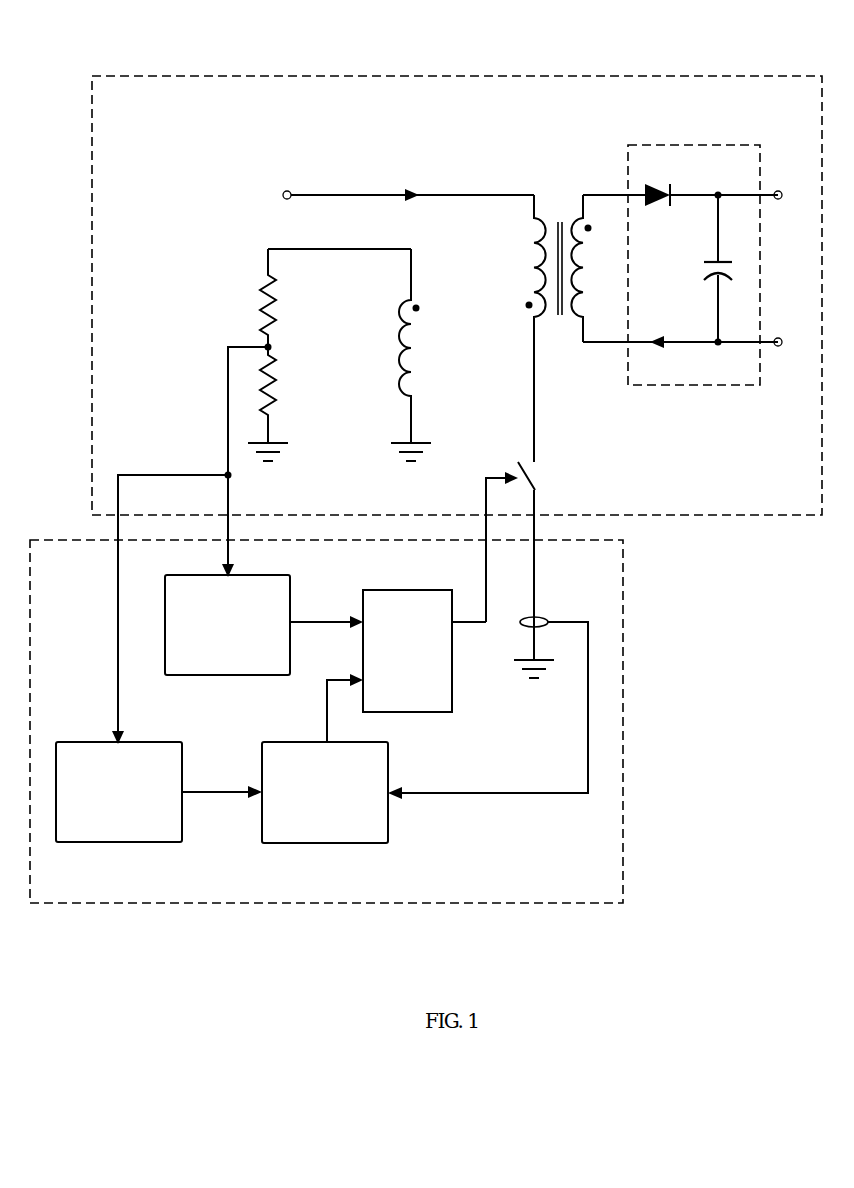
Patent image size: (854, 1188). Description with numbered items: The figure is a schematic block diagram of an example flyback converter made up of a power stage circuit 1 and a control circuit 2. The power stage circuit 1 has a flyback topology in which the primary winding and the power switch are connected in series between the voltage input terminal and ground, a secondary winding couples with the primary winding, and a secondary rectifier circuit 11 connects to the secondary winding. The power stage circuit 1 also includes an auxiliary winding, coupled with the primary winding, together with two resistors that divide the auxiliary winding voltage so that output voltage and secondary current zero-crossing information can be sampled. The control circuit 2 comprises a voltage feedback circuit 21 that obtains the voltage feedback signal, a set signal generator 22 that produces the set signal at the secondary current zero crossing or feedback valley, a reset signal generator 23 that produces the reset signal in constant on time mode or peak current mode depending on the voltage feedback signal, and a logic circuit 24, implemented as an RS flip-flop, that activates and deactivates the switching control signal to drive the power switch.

The power stage circuit 1 is at (470, 76).
The control circuit 2 is at (623, 673).
The secondary rectifier circuit 11 is at (683, 145).
The voltage feedback circuit 21 is at (182, 832).
The set signal generator 22 is at (222, 675).
The reset signal generator 23 is at (388, 830).
The logic circuit 24 is at (452, 690).